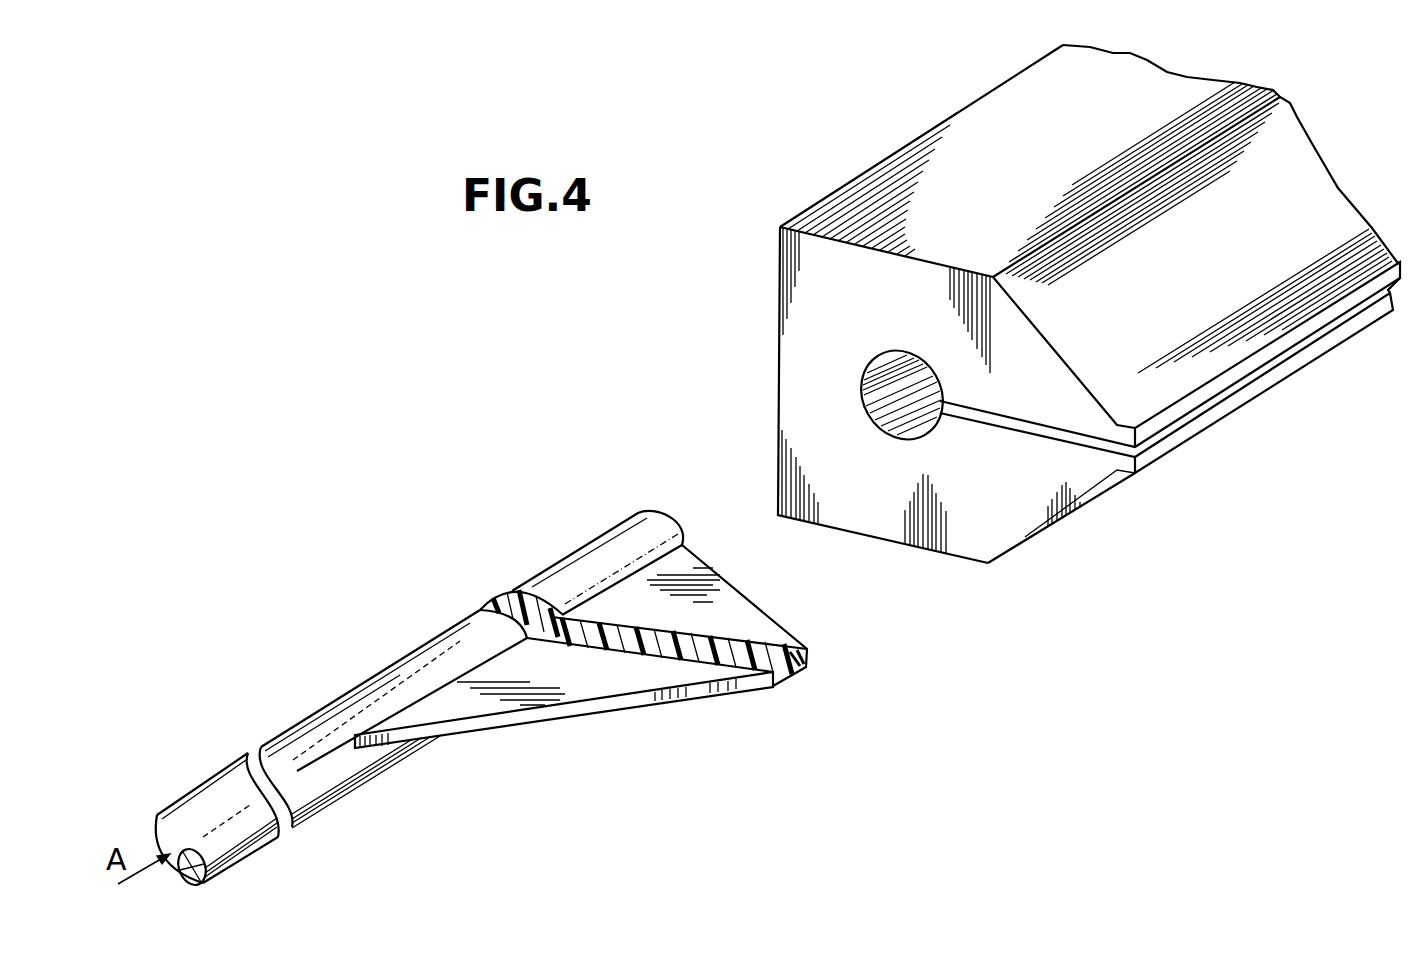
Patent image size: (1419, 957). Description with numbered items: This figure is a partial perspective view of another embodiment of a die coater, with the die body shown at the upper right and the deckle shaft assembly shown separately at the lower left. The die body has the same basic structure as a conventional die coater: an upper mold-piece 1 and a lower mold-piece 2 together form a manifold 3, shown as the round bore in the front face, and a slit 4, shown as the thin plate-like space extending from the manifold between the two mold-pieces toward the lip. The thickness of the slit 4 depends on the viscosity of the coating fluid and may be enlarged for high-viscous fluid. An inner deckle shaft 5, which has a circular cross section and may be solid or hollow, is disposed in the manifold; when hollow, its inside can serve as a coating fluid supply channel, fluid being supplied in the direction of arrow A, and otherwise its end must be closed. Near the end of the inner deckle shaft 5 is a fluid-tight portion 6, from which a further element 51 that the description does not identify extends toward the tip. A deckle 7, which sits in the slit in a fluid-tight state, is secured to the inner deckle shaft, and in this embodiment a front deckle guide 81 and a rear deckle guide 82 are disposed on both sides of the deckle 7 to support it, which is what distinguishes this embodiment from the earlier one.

The upper mold-piece 1 is at (797, 282).
The lower mold-piece 2 is at (1017, 525).
The manifold 3 is at (863, 402).
The slit 4 is at (1091, 440).
The inner deckle shaft 5 is at (448, 650).
The bare optical fiber 51 is at (600, 562).
The fluid-tight portion 6 is at (505, 600).
The deckle 7 is at (804, 662).
The front deckle guide 81 is at (728, 598).
The rear deckle guide 82 is at (608, 683).